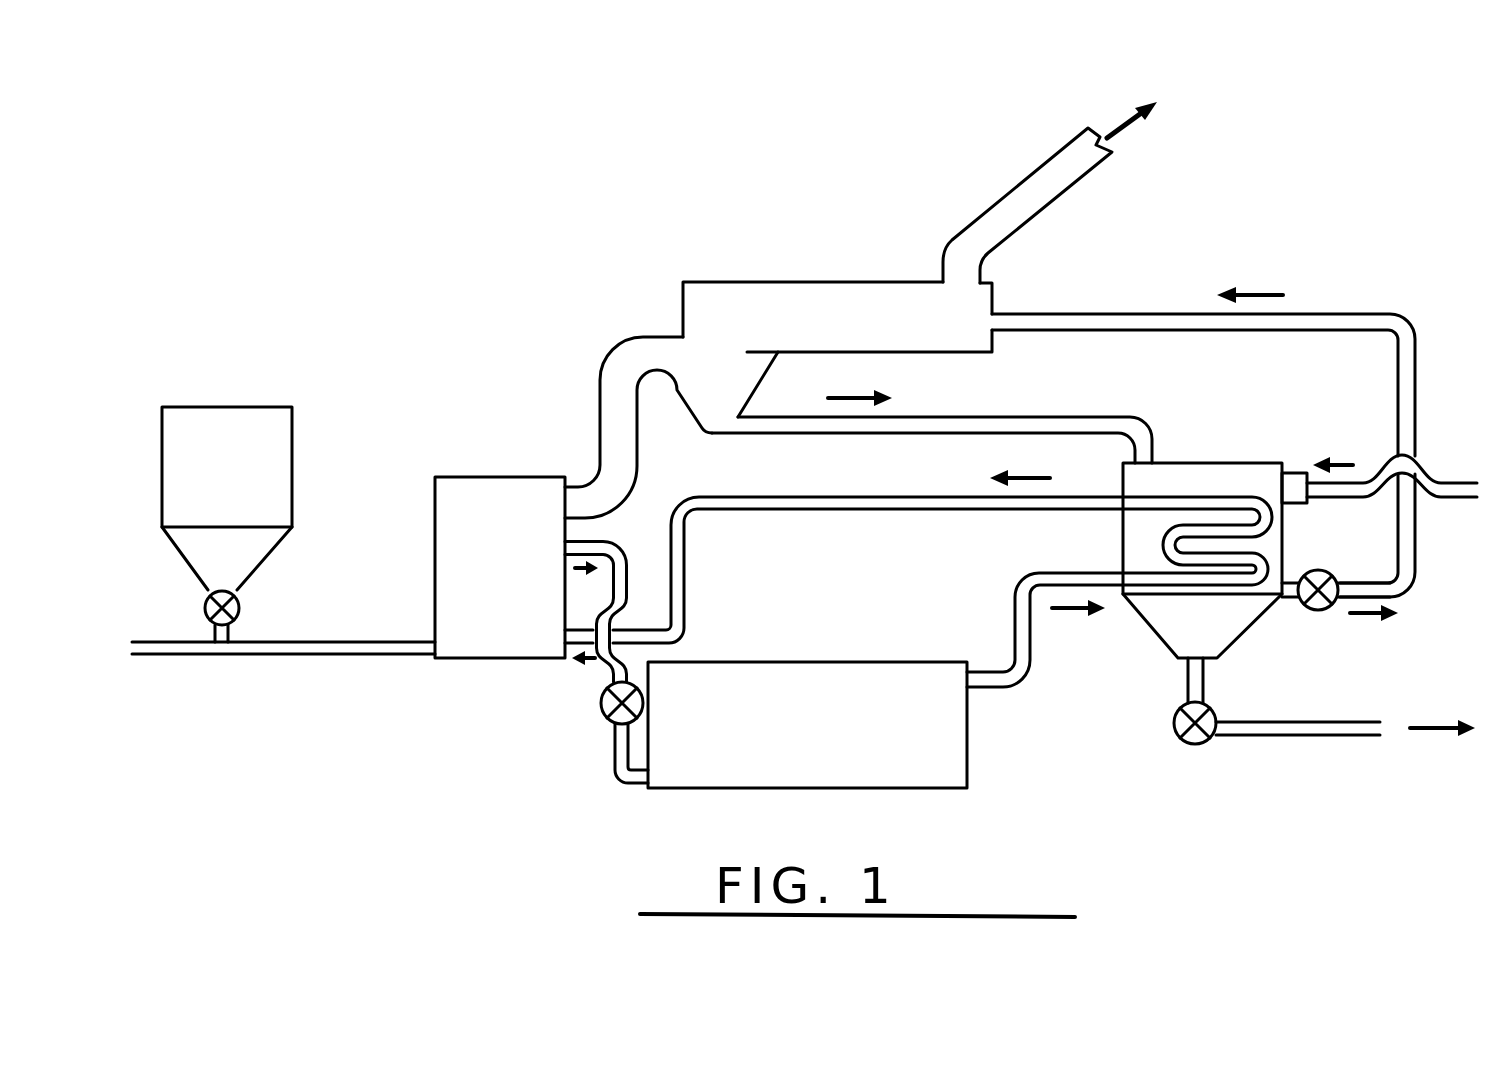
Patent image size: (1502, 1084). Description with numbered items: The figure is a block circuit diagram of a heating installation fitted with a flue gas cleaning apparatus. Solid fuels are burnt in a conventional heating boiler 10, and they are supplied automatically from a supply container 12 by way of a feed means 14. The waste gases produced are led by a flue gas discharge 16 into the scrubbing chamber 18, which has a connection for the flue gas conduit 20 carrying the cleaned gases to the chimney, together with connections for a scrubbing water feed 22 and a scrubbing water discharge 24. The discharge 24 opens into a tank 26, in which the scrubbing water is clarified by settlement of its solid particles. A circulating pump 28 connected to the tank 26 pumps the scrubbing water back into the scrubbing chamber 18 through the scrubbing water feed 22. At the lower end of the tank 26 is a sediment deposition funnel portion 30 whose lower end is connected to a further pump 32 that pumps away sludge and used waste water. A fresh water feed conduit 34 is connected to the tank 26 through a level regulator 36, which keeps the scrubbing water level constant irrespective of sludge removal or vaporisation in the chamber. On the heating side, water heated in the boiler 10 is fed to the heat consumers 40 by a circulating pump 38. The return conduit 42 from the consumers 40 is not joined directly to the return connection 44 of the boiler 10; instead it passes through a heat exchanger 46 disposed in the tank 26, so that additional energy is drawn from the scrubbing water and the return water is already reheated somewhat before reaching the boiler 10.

The heating boiler 10 is at (476, 511).
The supply container 12 is at (239, 434).
The feed means 14 is at (267, 657).
The flue gas discharge 16 is at (620, 445).
The scrubbing chamber 18 is at (797, 323).
The flue gas conduit 20 is at (1048, 187).
The scrubbing water feed 22 is at (1033, 322).
The scrubbing water discharge 24 is at (952, 415).
The tank 26 is at (1163, 483).
The circulating pump 28 is at (1338, 578).
The sediment deposition funnel portion 30 is at (1240, 640).
The pump 32 is at (1207, 743).
The fresh water feed conduit 34 is at (1457, 490).
The level regulator 36 is at (1299, 467).
The circulating pump 38 is at (605, 718).
The heat consumers 40 is at (938, 740).
The return conduit 42 is at (1022, 665).
The return connection 44 is at (682, 637).
The heat exchanger 46 is at (1237, 497).